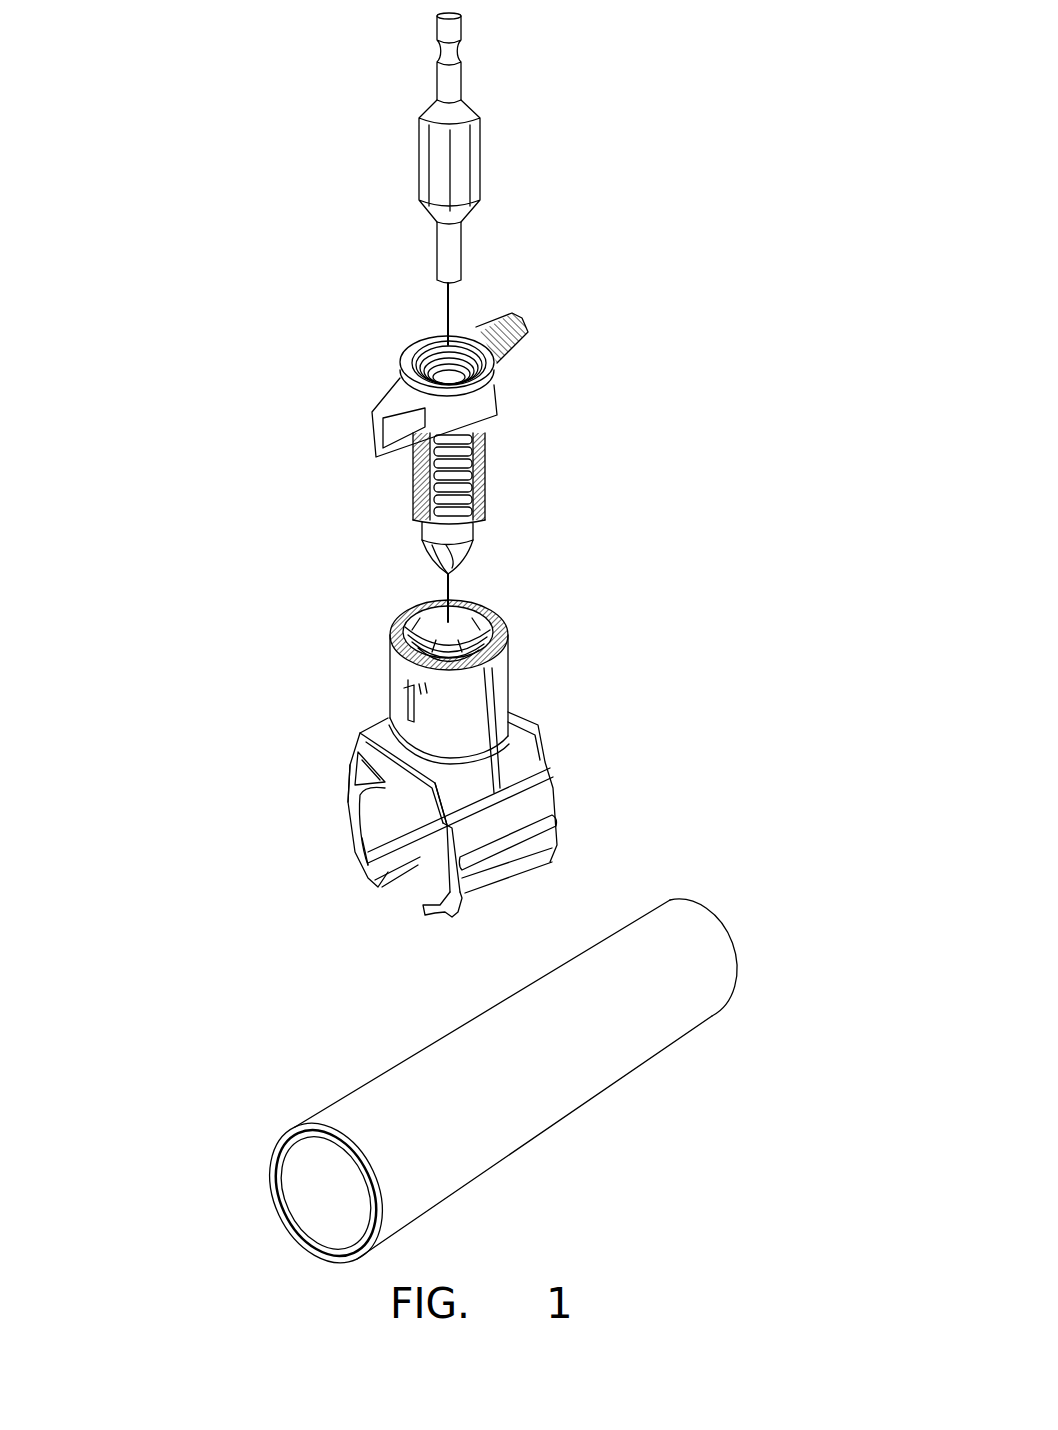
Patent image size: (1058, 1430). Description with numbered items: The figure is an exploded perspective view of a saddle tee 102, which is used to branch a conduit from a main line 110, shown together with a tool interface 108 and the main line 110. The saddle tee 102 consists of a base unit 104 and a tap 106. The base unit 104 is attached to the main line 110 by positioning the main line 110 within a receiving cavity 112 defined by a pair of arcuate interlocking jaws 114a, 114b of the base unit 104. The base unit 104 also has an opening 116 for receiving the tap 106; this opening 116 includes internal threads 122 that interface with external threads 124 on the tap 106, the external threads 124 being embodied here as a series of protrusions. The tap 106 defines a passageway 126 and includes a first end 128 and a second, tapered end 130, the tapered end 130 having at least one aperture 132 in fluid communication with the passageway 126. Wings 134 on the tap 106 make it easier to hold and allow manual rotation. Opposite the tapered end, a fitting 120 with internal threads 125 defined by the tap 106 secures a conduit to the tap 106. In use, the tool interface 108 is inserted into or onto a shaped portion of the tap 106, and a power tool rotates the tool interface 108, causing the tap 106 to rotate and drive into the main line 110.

The saddle tee 102 is at (653, 663).
The base unit 104 is at (472, 756).
The tap 106 is at (459, 362).
The tool interface 108 is at (458, 170).
The main line 110 is at (617, 1023).
The receiving cavity 112 is at (412, 843).
The arcuate interlocking jaw 114a is at (465, 892).
The arcuate interlocking jaw 114b is at (350, 843).
The opening 116 is at (492, 607).
The fitting 120 is at (402, 358).
The internal threads 122 is at (396, 622).
The external threads 124 is at (457, 522).
The internal threads 125 is at (425, 345).
The passageway 126 is at (455, 345).
The first end 128 is at (482, 439).
The second end 130 is at (462, 548).
The aperture 132 is at (440, 555).
The wings 134 is at (530, 322).